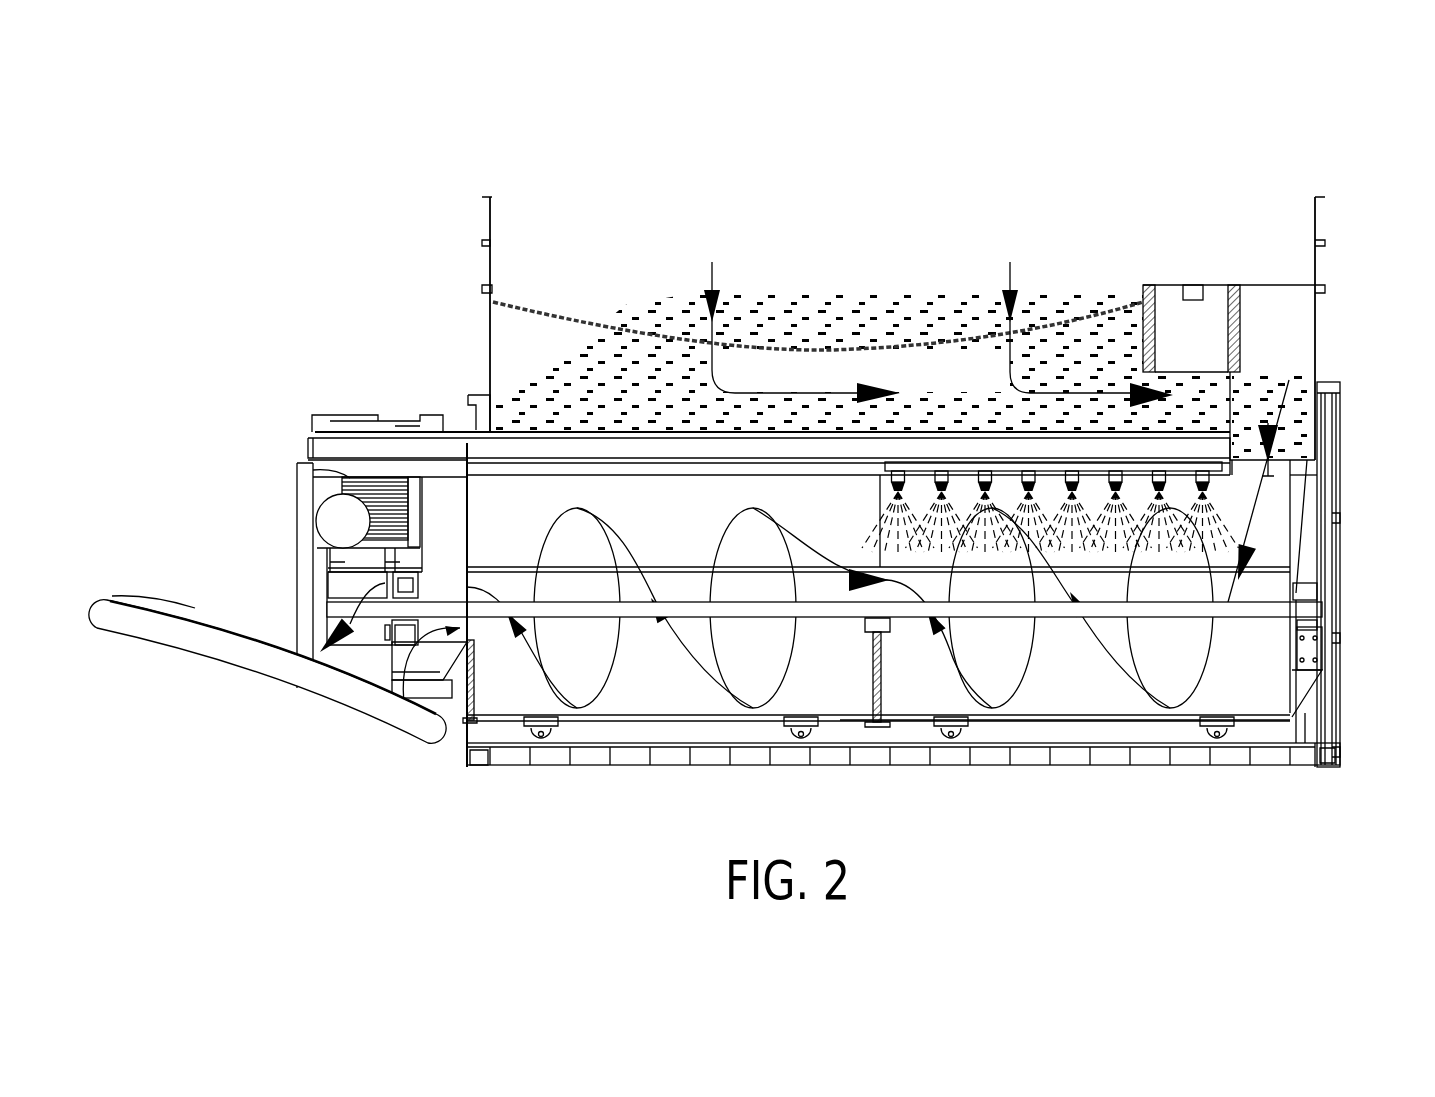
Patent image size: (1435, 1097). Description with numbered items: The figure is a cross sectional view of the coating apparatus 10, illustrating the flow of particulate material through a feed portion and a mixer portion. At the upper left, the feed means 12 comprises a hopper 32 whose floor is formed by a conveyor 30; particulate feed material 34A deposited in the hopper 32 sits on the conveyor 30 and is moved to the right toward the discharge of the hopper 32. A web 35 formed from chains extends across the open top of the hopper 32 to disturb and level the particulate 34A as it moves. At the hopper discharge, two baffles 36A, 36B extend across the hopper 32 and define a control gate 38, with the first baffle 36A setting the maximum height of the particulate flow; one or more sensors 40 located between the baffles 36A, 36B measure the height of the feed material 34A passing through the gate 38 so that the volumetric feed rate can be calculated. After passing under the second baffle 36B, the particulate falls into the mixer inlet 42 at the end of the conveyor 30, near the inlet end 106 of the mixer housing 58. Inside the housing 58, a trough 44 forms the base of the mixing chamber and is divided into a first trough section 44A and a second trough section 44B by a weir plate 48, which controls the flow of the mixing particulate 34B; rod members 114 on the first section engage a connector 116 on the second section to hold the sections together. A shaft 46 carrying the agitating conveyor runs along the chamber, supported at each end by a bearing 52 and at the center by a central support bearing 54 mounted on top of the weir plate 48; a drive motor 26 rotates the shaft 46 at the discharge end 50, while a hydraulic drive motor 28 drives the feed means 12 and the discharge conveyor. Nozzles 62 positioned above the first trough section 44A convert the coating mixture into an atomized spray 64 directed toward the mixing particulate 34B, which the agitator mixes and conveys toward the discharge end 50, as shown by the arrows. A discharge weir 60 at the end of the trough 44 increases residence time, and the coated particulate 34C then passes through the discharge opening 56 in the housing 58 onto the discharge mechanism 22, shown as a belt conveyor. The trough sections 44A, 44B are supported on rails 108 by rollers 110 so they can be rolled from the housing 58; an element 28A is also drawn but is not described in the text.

The apparatus 10 is at (330, 240).
The feed means 12 is at (470, 307).
The discharge mechanism 22 is at (240, 660).
The drive motor 26 is at (357, 485).
The hydraulic drive motor 28 is at (340, 522).
The belt guard 28A is at (317, 413).
The conveyor 30 is at (663, 433).
The hopper 32 is at (490, 340).
The particulate feed material 34A is at (613, 316).
The mixing particulate 34B is at (1067, 700).
The coated particulate 34C is at (320, 655).
The web 35 is at (832, 350).
The first baffle 36A is at (1150, 287).
The second baffle 36B is at (1235, 308).
The control gate 38 is at (1160, 417).
The sensors 40 is at (1190, 287).
The mixer inlet 42 is at (1283, 497).
The trough 44 is at (1273, 580).
The first trough section 44A is at (1260, 700).
The second trough section 44B is at (688, 690).
The shaft 46 is at (1305, 648).
The weir plate 48 is at (887, 662).
The discharge end 50 is at (467, 467).
The bearing 52 is at (395, 663).
The central support bearing 54 is at (870, 636).
The discharge opening 56 is at (420, 672).
The mixer housing 58 is at (1340, 702).
The discharge weir 60 is at (473, 690).
The nozzles 62 is at (983, 471).
The atomized spray 64 is at (870, 572).
The inlet end 106 is at (1317, 463).
The rails 108 is at (610, 748).
The rollers 110 is at (543, 745).
The rod members 114 is at (1137, 723).
The connector 116 is at (880, 725).